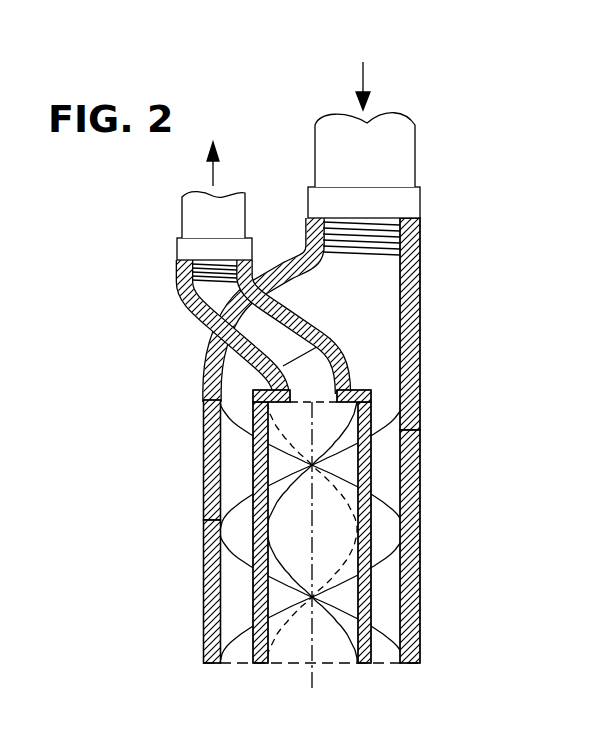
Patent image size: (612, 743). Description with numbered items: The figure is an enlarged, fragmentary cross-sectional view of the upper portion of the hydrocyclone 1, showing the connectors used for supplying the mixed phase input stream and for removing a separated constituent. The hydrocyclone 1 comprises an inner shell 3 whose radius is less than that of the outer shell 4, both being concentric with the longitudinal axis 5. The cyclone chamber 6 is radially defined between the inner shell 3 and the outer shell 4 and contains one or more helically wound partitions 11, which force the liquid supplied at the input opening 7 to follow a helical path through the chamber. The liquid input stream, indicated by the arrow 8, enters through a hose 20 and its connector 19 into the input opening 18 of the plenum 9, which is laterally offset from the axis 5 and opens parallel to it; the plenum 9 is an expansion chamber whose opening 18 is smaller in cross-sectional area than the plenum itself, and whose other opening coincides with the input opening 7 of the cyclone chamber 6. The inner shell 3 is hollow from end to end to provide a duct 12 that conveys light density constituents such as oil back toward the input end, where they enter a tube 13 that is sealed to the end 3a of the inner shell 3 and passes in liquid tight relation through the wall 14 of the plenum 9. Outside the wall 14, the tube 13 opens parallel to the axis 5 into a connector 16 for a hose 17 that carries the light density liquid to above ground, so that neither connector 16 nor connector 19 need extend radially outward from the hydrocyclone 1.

The hydrocyclone 1 is at (448, 459).
The inner shell 3 is at (370, 430).
The end of the inner shell 3a is at (357, 387).
The outer shell 4 is at (416, 610).
The longitudinal axis 5 is at (312, 674).
The cyclone chamber 6 is at (230, 602).
The input opening 7 is at (212, 375).
The liquid input stream 8 is at (365, 78).
The plenum 9 is at (390, 307).
The helically wound partitions 11 is at (223, 483).
The duct 12 is at (333, 553).
The tube 13 is at (190, 311).
The wall of the plenum 14 is at (290, 258).
The connector 16 is at (178, 253).
The hose 17 is at (188, 212).
The input opening of the plenum 18 is at (415, 236).
The connector 19 is at (412, 205).
The hose 20 is at (412, 153).